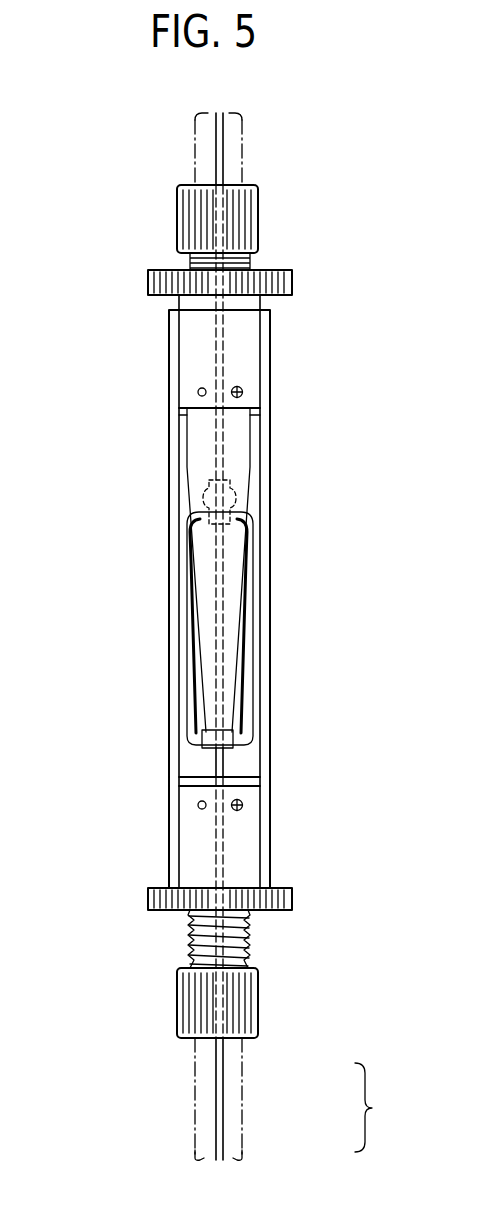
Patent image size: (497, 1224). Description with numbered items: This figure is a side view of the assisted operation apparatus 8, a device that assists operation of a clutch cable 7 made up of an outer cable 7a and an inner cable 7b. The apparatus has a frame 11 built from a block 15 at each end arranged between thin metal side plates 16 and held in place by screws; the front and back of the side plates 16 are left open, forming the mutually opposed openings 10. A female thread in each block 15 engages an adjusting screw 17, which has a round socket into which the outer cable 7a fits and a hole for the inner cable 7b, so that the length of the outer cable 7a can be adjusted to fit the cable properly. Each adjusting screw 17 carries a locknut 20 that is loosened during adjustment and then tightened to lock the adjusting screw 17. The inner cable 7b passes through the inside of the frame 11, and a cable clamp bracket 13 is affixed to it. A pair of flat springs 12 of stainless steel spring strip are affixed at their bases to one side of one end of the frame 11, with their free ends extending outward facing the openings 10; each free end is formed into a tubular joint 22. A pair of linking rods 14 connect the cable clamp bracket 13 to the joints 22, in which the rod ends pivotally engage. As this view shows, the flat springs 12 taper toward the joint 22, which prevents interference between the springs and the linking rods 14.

The clutch cable 7 is at (377, 1107).
The outer cable 7a is at (233, 1060).
The inner cable 7b is at (222, 608).
The assisted operation apparatus 8 is at (110, 356).
The openings 10 is at (178, 480).
The frame 11 is at (248, 370).
The flat springs 12 is at (205, 572).
The cable clamp bracket 13 is at (238, 487).
The linking rods 14 is at (243, 665).
The block 15 is at (255, 822).
The side plates 16 is at (176, 748).
The adjusting screws 17 is at (178, 213).
The locknut 20 is at (285, 283).
The tubular joint 22 is at (230, 752).